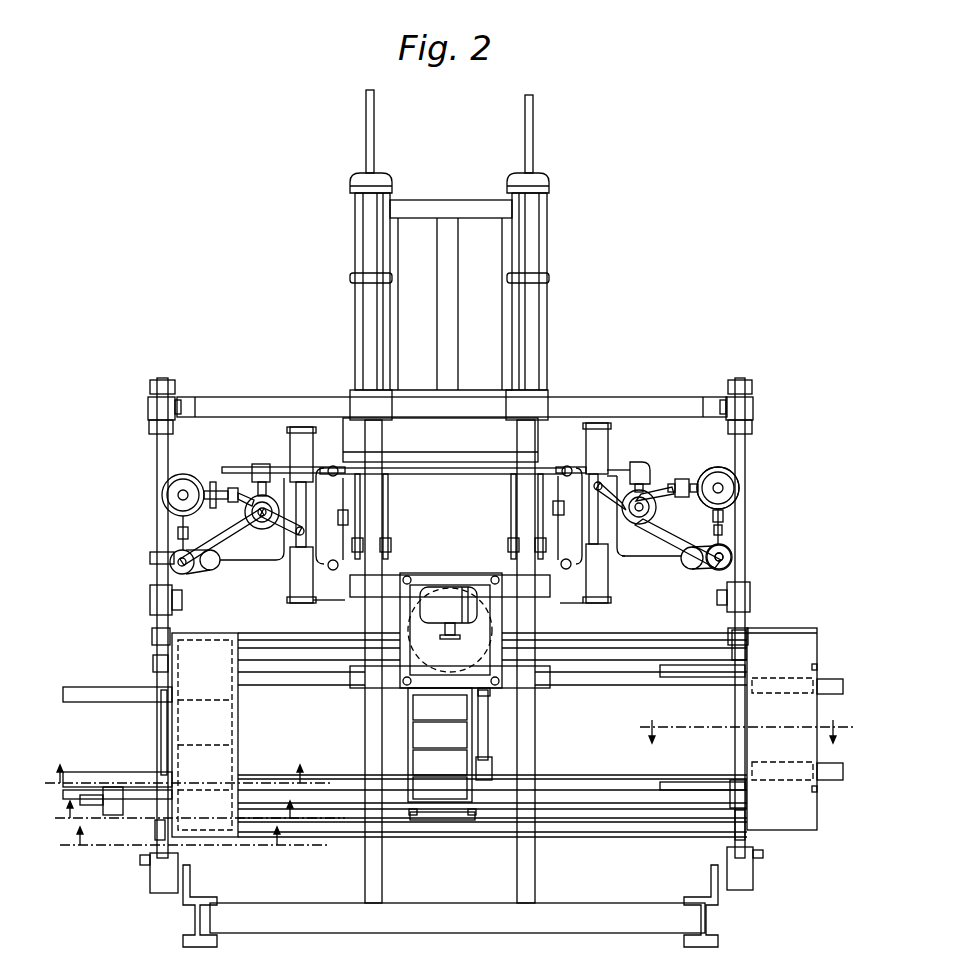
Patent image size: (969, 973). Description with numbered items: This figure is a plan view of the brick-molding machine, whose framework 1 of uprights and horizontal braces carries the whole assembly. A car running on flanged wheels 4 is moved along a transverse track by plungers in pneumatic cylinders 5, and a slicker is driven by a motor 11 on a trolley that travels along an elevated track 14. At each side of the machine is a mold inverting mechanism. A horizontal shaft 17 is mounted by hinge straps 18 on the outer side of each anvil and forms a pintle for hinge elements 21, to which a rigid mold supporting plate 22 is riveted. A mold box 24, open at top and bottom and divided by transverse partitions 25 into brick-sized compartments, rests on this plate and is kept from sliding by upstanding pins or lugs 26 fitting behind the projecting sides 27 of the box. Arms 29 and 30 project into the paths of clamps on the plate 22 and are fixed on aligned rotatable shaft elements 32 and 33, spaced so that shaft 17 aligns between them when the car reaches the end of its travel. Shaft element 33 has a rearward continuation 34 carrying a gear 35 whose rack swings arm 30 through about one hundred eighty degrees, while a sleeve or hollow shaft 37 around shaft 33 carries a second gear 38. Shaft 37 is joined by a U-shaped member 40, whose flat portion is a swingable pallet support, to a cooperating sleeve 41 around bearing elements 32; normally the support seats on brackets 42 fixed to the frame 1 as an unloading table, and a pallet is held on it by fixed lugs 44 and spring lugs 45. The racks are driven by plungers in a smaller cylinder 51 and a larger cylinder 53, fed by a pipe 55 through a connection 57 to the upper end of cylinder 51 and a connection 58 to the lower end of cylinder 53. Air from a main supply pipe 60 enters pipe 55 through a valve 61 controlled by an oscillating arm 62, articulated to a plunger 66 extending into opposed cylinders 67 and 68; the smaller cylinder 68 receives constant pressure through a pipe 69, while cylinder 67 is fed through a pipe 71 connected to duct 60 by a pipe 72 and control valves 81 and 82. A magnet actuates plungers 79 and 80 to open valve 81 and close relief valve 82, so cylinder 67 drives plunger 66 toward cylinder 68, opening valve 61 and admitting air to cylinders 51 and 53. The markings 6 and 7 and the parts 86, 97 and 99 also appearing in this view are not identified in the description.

The framework 1 is at (195, 945).
The flanged wheels 4 is at (195, 842).
The cylinders 5 is at (186, 780).
The section line 6- 6 is at (197, 815).
The section line 7- 7 is at (743, 729).
The motor 11 is at (452, 600).
The elevated track 14 is at (375, 850).
The horizontal shaft 17 is at (488, 727).
The hinge straps 18 is at (490, 694).
The hinge elements 21 is at (455, 790).
The mold supporting plate 22 is at (472, 822).
The mold box 24 is at (408, 730).
The transverse partitions 25 is at (440, 750).
The upstanding pins or lugs 26 is at (492, 829).
The projecting sides 27 is at (409, 813).
The arm 29 is at (158, 790).
The arm 30 is at (153, 665).
The rotatable shaft element 32 is at (155, 828).
The rotatable shaft element 33 is at (152, 636).
The rearward continuation 34 is at (745, 522).
The gear 35 is at (162, 495).
The sleeve or hollow shaft 37 is at (150, 600).
The second gear 38 is at (170, 562).
The U-shaped member 40 is at (235, 725).
The cooperating sleeve 41 is at (150, 848).
The brackets 42 is at (110, 700).
The fixed lugs 44 is at (812, 666).
The spring lugs 45 is at (746, 660).
The cylinder 51 is at (713, 569).
The cylinder 53 is at (716, 467).
The pipe 55 is at (714, 530).
The connection 57 is at (686, 568).
The connection 58 is at (712, 514).
The main supply pipe 60 is at (638, 463).
The valve 61 is at (642, 514).
The oscillating arm 62 is at (634, 517).
The plunger 66 is at (618, 558).
The pneumatic cylinder 67 is at (604, 441).
The pneumatic cylinder 68 is at (608, 590).
The pipe 69 is at (575, 604).
The pipe 71 is at (581, 446).
The pipe 72 is at (572, 491).
The plunger 79 is at (536, 520).
The plunger 80 is at (535, 474).
The valve 81 is at (567, 465).
The relief valve 82 is at (567, 569).
The fitting 86 is at (682, 479).
The link 97 is at (678, 542).
The pipe 99 is at (648, 558).